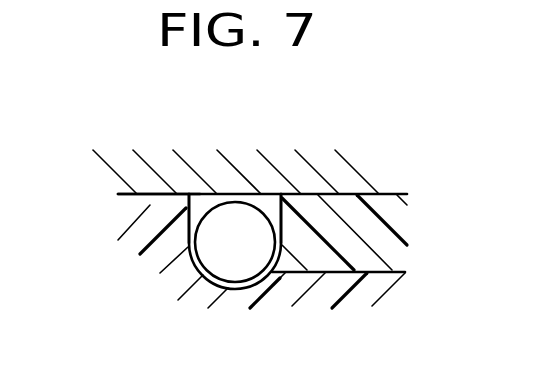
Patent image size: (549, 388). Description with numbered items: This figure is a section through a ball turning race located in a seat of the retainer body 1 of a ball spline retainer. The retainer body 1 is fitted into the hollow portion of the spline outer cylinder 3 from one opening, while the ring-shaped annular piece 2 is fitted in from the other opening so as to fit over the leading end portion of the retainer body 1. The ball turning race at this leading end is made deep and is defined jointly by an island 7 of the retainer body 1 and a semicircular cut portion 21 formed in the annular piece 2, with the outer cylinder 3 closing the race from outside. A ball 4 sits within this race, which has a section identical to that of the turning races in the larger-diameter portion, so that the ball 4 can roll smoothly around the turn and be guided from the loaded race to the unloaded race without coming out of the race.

The retainer body 1 is at (127, 194).
The annular piece 2 is at (377, 194).
The island 7 is at (168, 210).
The spline outer cylinder 3 is at (152, 197).
The ball 4 is at (238, 275).
The semicircular cut portion 21 is at (278, 217).